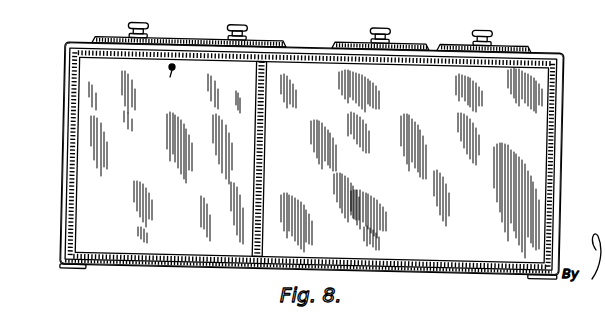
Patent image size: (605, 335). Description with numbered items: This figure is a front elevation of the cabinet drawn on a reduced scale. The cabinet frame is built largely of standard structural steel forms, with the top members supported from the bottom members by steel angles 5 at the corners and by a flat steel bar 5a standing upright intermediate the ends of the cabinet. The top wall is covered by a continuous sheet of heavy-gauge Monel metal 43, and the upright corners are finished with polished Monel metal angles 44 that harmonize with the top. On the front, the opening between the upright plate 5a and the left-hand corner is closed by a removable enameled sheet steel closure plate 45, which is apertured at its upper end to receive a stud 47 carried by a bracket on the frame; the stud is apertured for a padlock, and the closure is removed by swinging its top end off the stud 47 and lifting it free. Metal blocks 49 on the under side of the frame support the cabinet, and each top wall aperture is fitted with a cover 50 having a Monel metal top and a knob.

The steel angle 5 is at (77, 152).
The flat steel bar 5a is at (263, 167).
The Monel metal sheet 43 is at (542, 50).
The corner angle 44 is at (66, 101).
The removable closure plate 45 is at (178, 236).
The stud 47 is at (178, 80).
The metal block 49 is at (70, 267).
The cover 50 is at (508, 29).